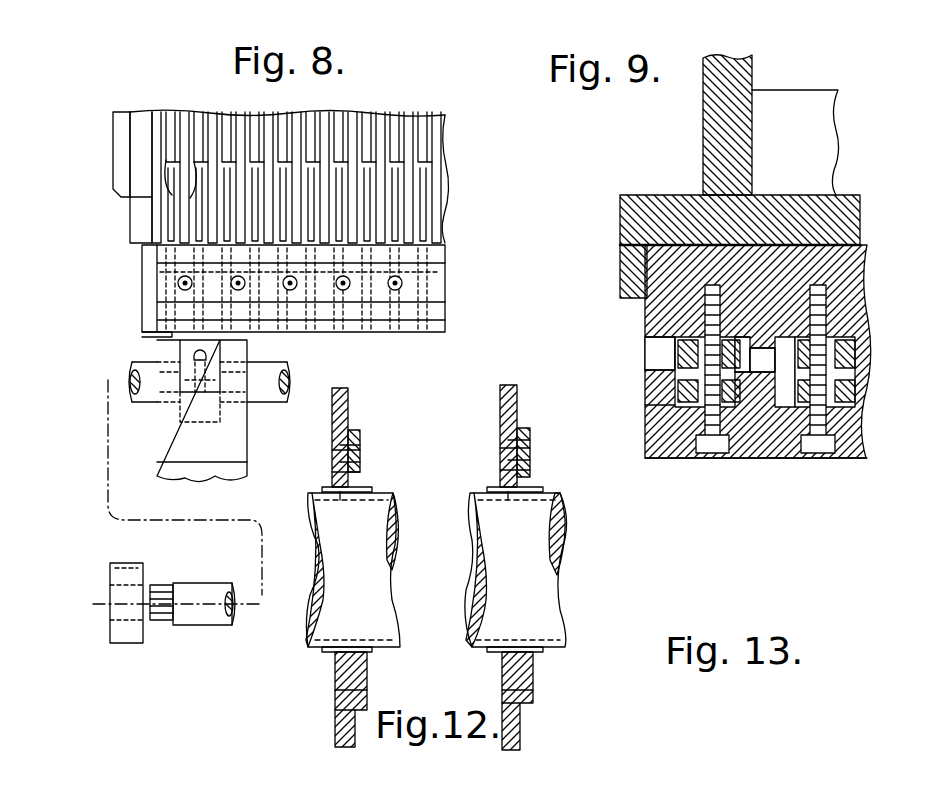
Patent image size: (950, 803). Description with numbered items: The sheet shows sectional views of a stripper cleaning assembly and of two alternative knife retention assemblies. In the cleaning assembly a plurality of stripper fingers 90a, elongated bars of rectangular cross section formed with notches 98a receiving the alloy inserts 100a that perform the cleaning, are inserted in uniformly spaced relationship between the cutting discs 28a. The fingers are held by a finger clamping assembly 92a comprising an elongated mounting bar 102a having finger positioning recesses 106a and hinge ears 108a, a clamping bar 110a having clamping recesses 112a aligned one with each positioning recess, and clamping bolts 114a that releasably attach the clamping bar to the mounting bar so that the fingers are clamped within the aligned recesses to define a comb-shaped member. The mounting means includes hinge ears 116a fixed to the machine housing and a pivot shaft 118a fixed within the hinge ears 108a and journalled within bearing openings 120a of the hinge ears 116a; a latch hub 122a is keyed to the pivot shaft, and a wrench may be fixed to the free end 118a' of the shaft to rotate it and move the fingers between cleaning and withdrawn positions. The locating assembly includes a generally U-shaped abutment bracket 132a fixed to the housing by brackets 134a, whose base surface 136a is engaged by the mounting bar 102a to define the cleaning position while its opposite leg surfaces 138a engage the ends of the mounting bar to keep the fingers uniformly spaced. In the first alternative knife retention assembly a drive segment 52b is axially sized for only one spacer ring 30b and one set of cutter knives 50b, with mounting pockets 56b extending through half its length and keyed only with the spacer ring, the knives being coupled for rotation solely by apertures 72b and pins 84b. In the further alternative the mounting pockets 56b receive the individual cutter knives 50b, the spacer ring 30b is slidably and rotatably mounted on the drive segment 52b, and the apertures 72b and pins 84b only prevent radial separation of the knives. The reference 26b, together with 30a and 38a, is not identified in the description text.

In FIG. 8, the cutting discs 28a is at (148, 190).
In FIG. 8, the tooth 30a is at (200, 180).
In FIG. 8, the alloy inserts 100a is at (200, 165).
In FIG. 9, the alloy inserts 100a is at (690, 416).
In FIG. 8, the carrier frame 38a is at (158, 284).
In FIG. 8, the clamping bolts 114a is at (395, 291).
In FIG. 9, the clamping bolts 114a is at (712, 455).
In FIG. 8, the clamping bar 110a is at (447, 282).
In FIG. 9, the clamping bar 110a is at (790, 458).
In FIG. 8, the mounting bar 102a is at (446, 330).
In FIG. 9, the mounting bar 102a is at (862, 250).
In FIG. 8, the hinge ears 108a is at (172, 336).
In FIG. 8, the hinge ears 116a is at (249, 441).
In FIG. 8, the bearing openings 120a is at (262, 345).
In FIG. 8, the pivot shaft 118a is at (220, 515).
In FIG. 8, the free end 118a' is at (191, 578).
In FIG. 8, the latch hub 122a is at (124, 644).
In FIG. 12, the roller body 26b is at (388, 612).
In FIG. 13, the roller body 26b is at (555, 612).
In FIG. 12, the cutter knives 50b is at (349, 398).
In FIG. 13, the cutter knives 50b is at (500, 402).
In FIG. 12, the pins 84b is at (362, 440).
In FIG. 13, the pins 84b is at (530, 442).
In FIG. 12, the spacer ring 30b is at (362, 455).
In FIG. 13, the spacer ring 30b is at (522, 440).
In FIG. 12, the apertures 72b is at (336, 456).
In FIG. 13, the apertures 72b is at (512, 446).
In FIG. 12, the mounting pockets 56b is at (360, 470).
In FIG. 13, the mounting pockets 56b is at (506, 472).
In FIG. 12, the drive segment 52b is at (345, 494).
In FIG. 13, the drive segment 52b is at (512, 494).
In FIG. 9, the brackets 134a is at (703, 98).
In FIG. 9, the base surface 136a is at (760, 245).
In FIG. 9, the abutment bracket 132a is at (672, 195).
In FIG. 9, the leg surfaces 138a is at (640, 246).
In FIG. 9, the stripper fingers 90a is at (748, 340).
In FIG. 9, the finger positioning recesses 106a is at (688, 340).
In FIG. 9, the notches 98a is at (678, 395).
In FIG. 9, the clamping recesses 112a is at (825, 456).
In FIG. 9, the finger clamping assembly 92a is at (618, 302).